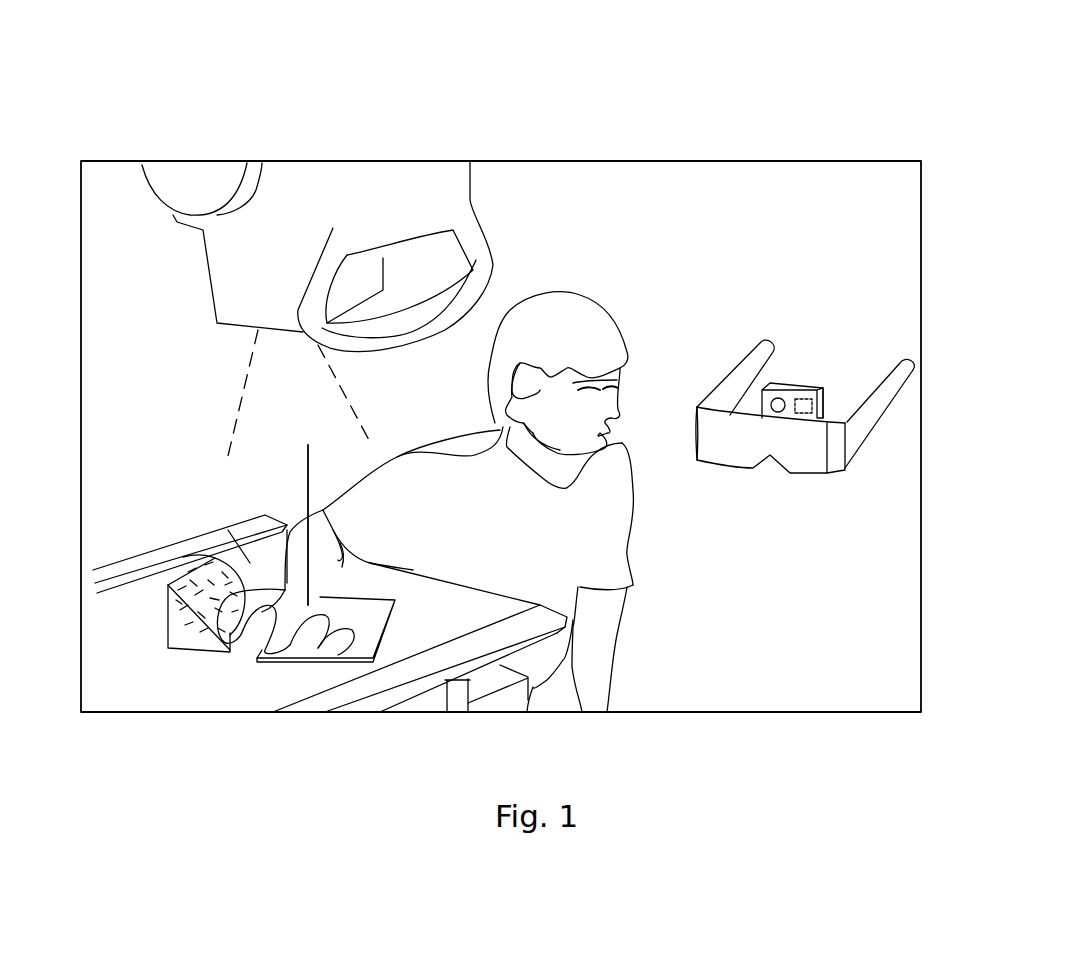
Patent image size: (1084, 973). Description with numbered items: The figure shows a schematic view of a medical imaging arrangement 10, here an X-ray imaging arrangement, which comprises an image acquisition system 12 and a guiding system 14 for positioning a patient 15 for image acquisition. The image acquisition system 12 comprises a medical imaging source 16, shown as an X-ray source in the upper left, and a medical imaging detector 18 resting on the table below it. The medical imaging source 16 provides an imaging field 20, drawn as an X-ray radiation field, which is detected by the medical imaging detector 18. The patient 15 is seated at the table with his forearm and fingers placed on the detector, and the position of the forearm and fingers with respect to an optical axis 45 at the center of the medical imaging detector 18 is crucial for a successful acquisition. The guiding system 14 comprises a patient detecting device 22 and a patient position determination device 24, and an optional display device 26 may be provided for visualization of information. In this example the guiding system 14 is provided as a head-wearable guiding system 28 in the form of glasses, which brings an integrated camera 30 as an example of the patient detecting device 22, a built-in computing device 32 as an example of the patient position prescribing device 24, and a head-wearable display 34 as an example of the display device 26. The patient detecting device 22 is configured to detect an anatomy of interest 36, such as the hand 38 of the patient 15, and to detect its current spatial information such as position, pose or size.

The medical imaging arrangement 10 is at (743, 147).
The image acquisition system 12 is at (212, 430).
The guiding system 14 is at (791, 386).
The patient 15 is at (603, 290).
The medical imaging source 16 is at (203, 293).
The medical imaging detector 18 is at (193, 578).
The imaging field 20 is at (280, 373).
The patient detecting device 22 is at (817, 363).
The patient position determination device 24 is at (833, 380).
The display device 26 is at (790, 490).
The head-wearable guiding system 28 is at (760, 297).
The integrated camera 30 is at (778, 382).
The built-in computing device 32 is at (812, 407).
The head-wearable display 34 is at (720, 463).
The anatomy of interest 36 is at (258, 573).
The hand 38 is at (190, 558).
The optical axis 45 is at (308, 487).